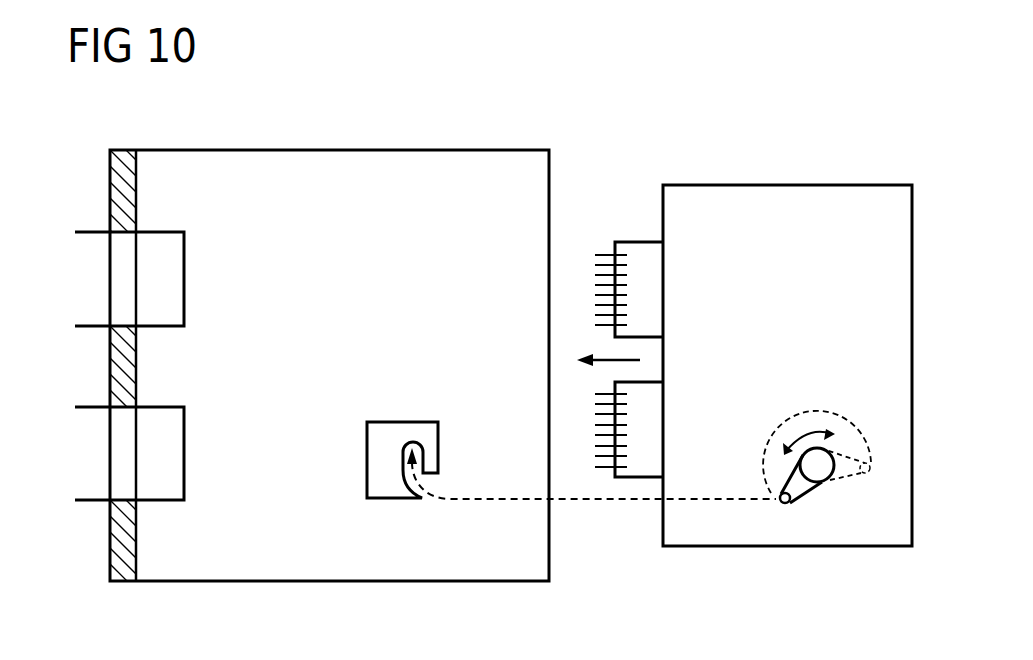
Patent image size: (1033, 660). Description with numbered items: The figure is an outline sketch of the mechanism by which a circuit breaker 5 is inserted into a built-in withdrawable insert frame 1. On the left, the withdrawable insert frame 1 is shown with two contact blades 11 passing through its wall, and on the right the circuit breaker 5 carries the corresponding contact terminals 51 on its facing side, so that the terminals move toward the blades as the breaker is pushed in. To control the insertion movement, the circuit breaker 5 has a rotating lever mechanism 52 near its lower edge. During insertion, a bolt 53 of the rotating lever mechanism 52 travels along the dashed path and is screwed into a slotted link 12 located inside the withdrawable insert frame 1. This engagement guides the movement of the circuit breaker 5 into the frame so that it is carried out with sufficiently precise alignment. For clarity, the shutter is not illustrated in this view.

The withdrawable insert frame 1 is at (475, 162).
The circuit breaker 5 is at (778, 190).
The contact blades 11 is at (170, 280).
The slotted link 12 is at (381, 480).
The contact terminals 51 is at (652, 285).
The rotating lever mechanism 52 is at (842, 483).
The bolt 53 is at (787, 504).